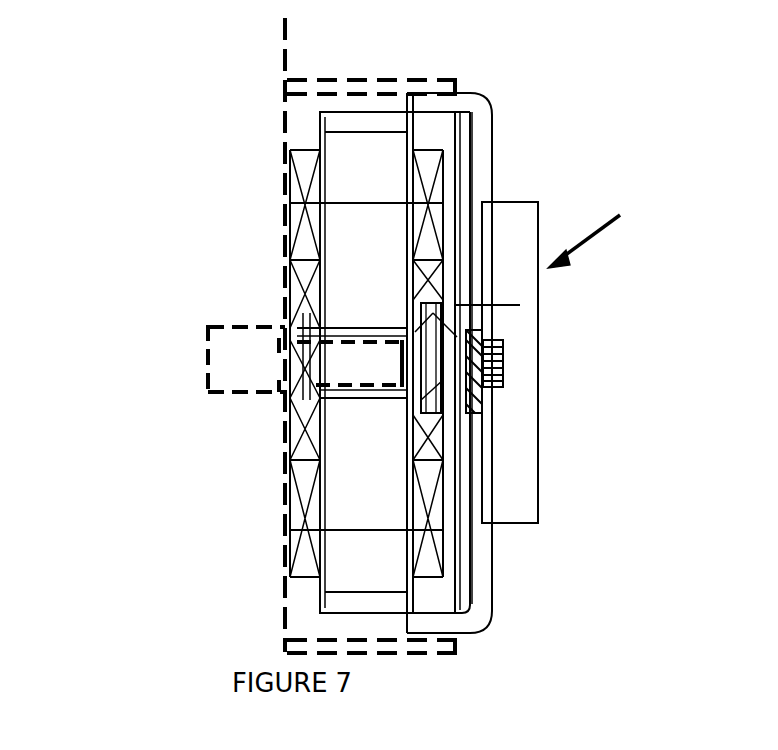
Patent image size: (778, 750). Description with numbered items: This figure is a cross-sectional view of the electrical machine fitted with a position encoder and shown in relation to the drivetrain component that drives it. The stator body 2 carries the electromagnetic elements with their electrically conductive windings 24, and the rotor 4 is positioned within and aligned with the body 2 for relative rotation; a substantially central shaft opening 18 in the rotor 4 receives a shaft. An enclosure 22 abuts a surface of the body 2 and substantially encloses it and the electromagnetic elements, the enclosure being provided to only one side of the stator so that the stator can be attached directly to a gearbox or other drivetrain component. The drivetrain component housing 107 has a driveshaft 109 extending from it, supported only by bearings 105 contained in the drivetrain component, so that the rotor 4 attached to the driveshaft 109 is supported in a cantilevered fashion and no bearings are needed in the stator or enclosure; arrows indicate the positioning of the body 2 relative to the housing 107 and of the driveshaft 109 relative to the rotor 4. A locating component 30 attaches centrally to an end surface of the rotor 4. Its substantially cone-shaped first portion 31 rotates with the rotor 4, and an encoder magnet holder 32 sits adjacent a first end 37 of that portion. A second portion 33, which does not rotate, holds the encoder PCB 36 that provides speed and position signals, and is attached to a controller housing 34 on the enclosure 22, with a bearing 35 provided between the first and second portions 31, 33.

The body 2 is at (357, 366).
The rotor 4 is at (348, 343).
The shaft opening 18 is at (336, 339).
The enclosure 22 is at (495, 130).
The electrically conductive windings 24 is at (293, 360).
The locating component 30 is at (604, 240).
The first portion 31 is at (428, 316).
The encoder magnet holder 32 is at (485, 487).
The second portion 33 is at (484, 305).
The controller housing 34 is at (525, 483).
The bearing 35 is at (485, 401).
The encoder PCB 36 is at (478, 360).
The first end 37 is at (460, 362).
The bearings 105 is at (243, 362).
The drivetrain component housing 107 is at (283, 64).
The driveshaft 109 is at (362, 362).